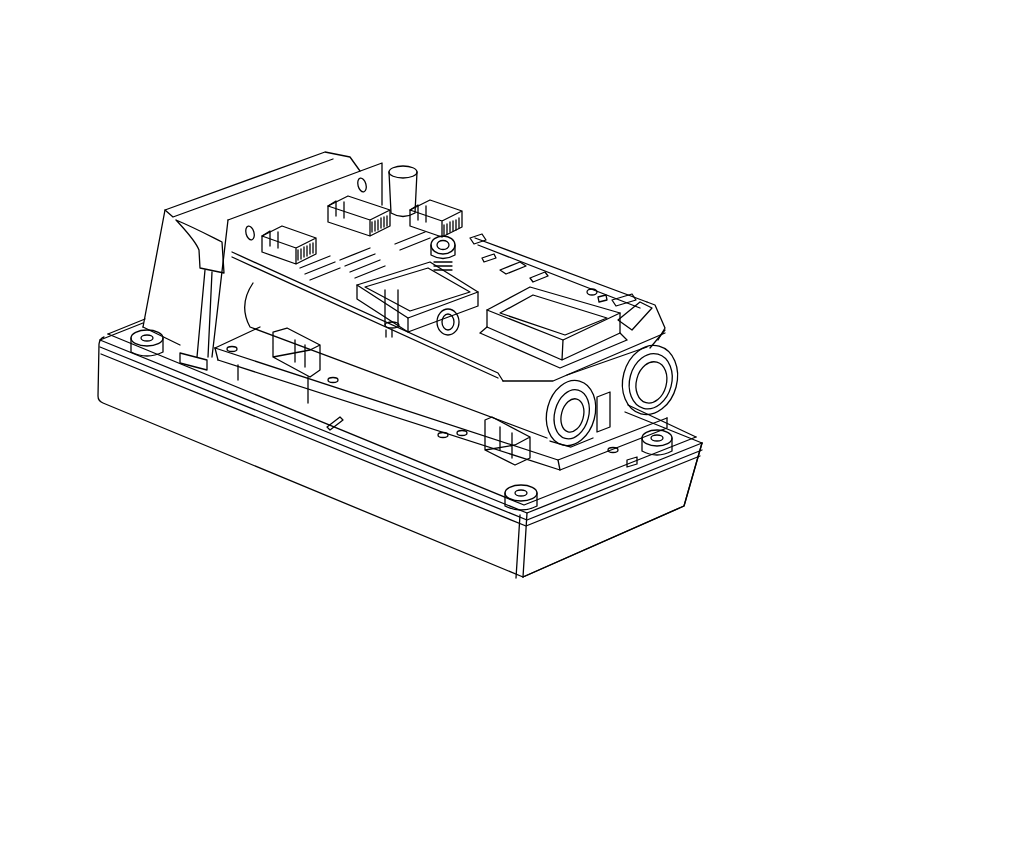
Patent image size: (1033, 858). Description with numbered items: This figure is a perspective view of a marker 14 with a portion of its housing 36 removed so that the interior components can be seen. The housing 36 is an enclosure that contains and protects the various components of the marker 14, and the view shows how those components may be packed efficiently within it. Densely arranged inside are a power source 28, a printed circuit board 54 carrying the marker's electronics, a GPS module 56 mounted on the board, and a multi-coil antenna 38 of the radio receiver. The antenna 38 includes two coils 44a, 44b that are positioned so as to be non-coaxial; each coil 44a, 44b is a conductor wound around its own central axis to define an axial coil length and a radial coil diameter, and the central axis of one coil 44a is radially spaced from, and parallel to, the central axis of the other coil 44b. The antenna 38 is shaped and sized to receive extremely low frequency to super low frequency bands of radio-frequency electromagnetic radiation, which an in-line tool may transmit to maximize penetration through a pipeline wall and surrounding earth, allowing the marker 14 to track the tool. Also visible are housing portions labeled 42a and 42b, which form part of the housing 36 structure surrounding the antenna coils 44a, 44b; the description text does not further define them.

The marker 14 is at (607, 117).
The power source 28 is at (153, 277).
The housing 36 is at (128, 413).
The antenna 38 is at (683, 392).
The housing portion 42a is at (698, 450).
The housing portion 42b is at (570, 443).
The coil 44a is at (620, 375).
The coil 44b is at (417, 373).
The printed circuit board 54 is at (322, 395).
The GPS module 56 is at (435, 285).